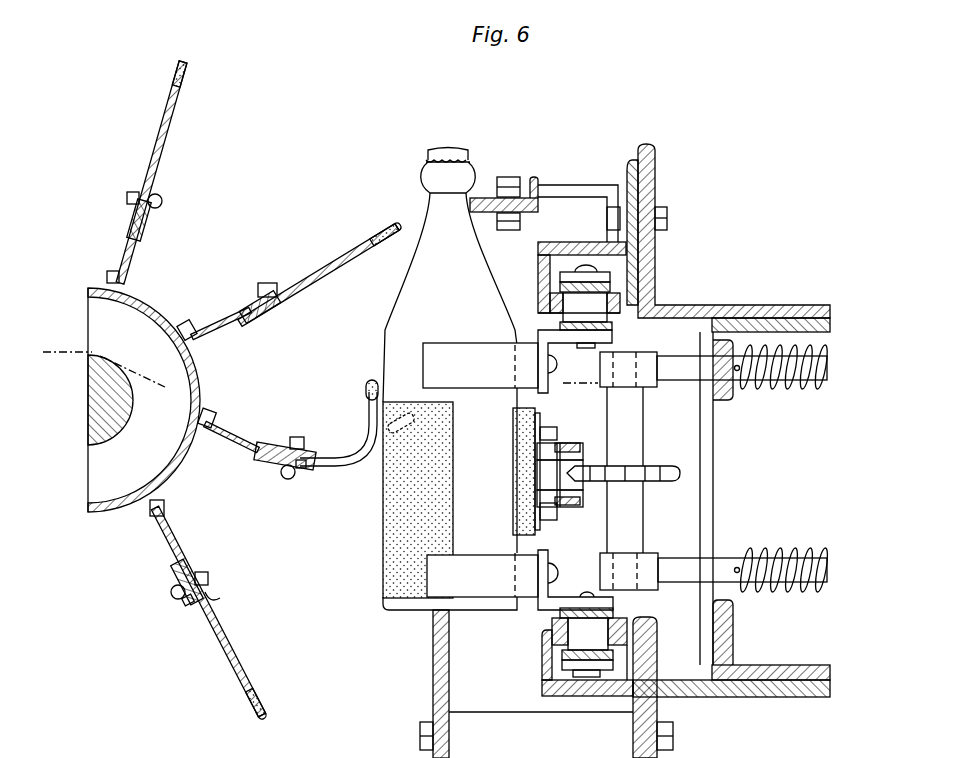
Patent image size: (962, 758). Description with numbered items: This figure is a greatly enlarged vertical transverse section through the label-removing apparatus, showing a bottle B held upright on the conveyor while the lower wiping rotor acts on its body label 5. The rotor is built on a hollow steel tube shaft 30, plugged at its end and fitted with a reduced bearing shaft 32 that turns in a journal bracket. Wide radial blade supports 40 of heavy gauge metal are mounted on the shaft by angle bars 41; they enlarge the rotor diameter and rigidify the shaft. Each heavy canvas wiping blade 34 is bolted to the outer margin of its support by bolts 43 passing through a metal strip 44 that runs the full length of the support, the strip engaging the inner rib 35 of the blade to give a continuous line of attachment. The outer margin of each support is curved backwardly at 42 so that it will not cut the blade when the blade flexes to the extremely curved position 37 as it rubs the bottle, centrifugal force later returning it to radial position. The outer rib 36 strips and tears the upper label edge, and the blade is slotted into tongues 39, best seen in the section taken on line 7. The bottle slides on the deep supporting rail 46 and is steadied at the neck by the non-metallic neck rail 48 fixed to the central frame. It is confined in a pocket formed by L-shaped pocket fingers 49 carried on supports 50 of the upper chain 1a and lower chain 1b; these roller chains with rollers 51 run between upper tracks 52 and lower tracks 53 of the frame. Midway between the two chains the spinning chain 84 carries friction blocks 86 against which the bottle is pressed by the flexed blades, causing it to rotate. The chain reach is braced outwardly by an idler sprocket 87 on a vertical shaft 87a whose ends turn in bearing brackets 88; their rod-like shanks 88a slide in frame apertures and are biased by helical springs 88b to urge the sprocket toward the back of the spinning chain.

The upper chain 1a is at (620, 273).
The lower chain 1b is at (563, 667).
The body label 5 is at (437, 437).
The section line for Fig. 7 is at (63, 303).
The shaft 30 is at (197, 375).
The bearing shaft 32 is at (120, 420).
The wiping blade 34 is at (163, 172).
The inner rib 35 is at (149, 232).
The outer rib 36 is at (392, 243).
The bent blade position 37 is at (357, 412).
The tongue 39 is at (353, 240).
The blade support 40 is at (223, 317).
The angle bar 41 is at (211, 410).
The backwardly curved outer margin 42 is at (317, 453).
The bolt 43 is at (290, 478).
The metal strip 44 is at (307, 477).
The supporting rail 46 is at (440, 660).
The neck rail 48 is at (480, 197).
The pocket finger 49 is at (455, 345).
The support 50 is at (548, 385).
The roller 51 is at (540, 302).
The upper tracks 52 is at (553, 270).
The lower tracks 53 is at (563, 650).
The spinning chain 84 is at (565, 503).
The friction block 86 is at (517, 472).
The idler sprocket 87 is at (675, 471).
The vertical shaft 87a is at (638, 500).
The bearing bracket 88 is at (650, 345).
The rod-like shank 88a is at (673, 373).
The helical spring 88b is at (775, 387).
The bottle B is at (412, 300).